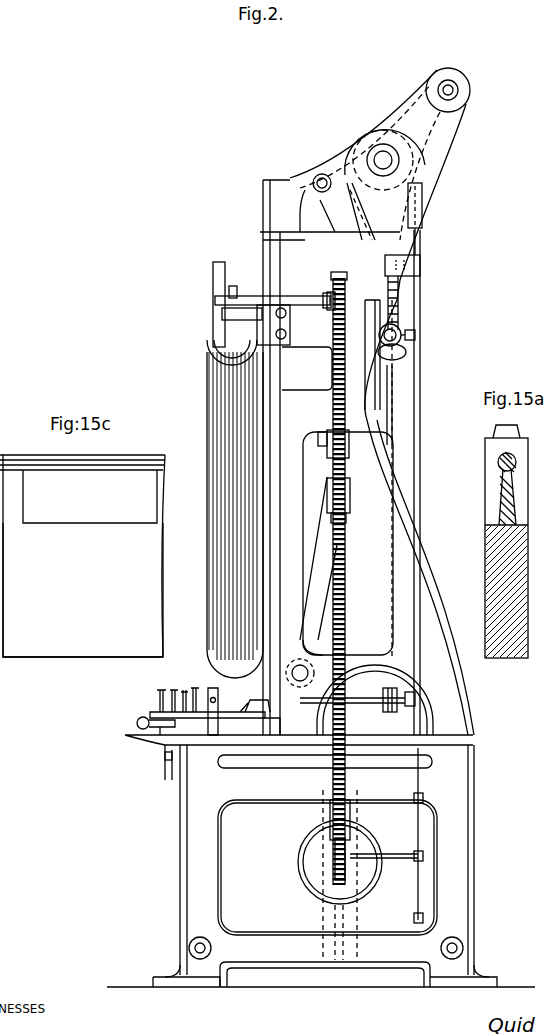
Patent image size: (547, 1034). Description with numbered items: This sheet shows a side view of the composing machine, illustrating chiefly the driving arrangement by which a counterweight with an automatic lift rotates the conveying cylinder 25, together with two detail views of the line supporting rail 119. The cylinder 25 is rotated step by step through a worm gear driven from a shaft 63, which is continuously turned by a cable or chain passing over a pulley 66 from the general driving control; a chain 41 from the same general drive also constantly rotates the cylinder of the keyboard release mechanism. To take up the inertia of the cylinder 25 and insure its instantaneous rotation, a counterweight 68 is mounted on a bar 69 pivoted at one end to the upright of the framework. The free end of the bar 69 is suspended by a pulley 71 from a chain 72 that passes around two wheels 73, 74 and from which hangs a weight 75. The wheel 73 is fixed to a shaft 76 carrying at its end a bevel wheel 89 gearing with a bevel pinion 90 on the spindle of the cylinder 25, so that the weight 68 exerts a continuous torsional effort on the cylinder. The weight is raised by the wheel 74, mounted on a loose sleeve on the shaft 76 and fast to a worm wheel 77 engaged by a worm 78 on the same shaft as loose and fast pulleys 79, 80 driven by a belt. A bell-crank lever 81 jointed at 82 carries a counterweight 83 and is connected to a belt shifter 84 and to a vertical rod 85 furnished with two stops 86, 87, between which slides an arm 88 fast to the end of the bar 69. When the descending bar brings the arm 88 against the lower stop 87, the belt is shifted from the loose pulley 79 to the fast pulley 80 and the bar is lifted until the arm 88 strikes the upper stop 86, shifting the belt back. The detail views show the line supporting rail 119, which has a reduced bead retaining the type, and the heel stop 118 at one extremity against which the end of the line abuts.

In FIG. 2, the conveying cylinder 25 is at (206, 479).
In FIG. 2, the chain 41 is at (322, 497).
In FIG. 2, the shaft 63 is at (362, 705).
In FIG. 2, the pulley 66 is at (392, 707).
In FIG. 2, the counterweight 68 is at (305, 890).
In FIG. 2, the weighted bar 69 is at (335, 861).
In FIG. 2, the pulley 71 is at (328, 800).
In FIG. 2, the chain 72 is at (346, 591).
In FIG. 2, the wheel 73 is at (330, 298).
In FIG. 2, the wheel 74 is at (340, 278).
In FIG. 2, the weight 75 is at (348, 506).
In FIG. 2, the shaft 76 is at (289, 302).
In FIG. 2, the worm wheel 77 is at (422, 278).
In FIG. 2, the worm 78 is at (405, 350).
In FIG. 2, the loose pulley 79 is at (410, 365).
In FIG. 2, the fast pulley 80 is at (381, 360).
In FIG. 2, the bell-crank lever 81 is at (420, 240).
In FIG. 2, the joint 82 is at (417, 336).
In FIG. 2, the counterweight 83 is at (423, 198).
In FIG. 2, the belt shifter 84 is at (412, 298).
In FIG. 2, the vertical rod 85 is at (431, 480).
In FIG. 2, the upper stop 86 is at (415, 800).
In FIG. 2, the lower stop 87 is at (414, 918).
In FIG. 2, the arm 88 is at (415, 861).
In FIG. 2, the bevel wheel 89 is at (222, 290).
In FIG. 2, the bevel pinion 90 is at (237, 288).
In FIG. 15C, the heel stop 118 is at (14, 498).
In FIG. 15C, the line supporting rail 119 is at (83, 590).
In FIG. 15A, the line supporting rail 119 is at (506, 554).